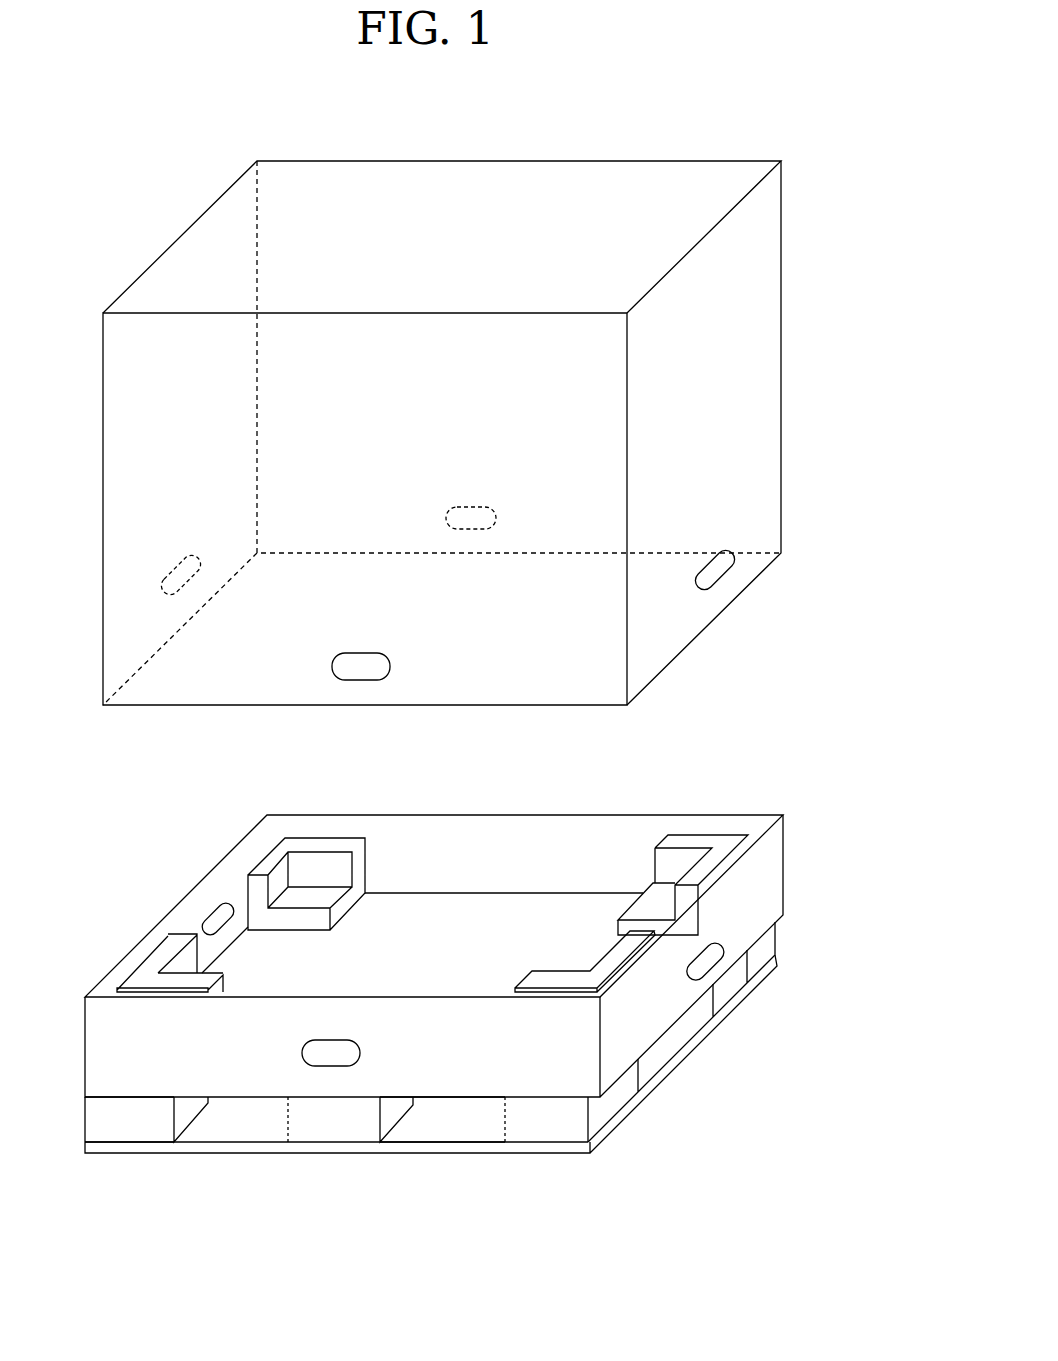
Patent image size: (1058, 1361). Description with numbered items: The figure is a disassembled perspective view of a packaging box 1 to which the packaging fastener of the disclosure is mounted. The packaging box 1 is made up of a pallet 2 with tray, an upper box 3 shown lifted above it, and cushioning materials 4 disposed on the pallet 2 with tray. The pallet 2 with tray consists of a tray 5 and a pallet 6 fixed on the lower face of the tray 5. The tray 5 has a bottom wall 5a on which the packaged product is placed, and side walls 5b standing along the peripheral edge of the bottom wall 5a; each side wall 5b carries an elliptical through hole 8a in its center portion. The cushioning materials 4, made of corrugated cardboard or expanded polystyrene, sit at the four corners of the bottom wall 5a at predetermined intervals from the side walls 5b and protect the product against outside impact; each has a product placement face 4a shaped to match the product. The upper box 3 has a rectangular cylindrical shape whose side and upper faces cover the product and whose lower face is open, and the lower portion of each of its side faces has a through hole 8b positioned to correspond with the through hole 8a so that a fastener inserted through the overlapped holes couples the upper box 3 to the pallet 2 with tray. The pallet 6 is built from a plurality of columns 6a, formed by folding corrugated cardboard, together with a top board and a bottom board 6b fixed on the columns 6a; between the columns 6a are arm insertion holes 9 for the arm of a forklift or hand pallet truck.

The packaging box 1 is at (883, 688).
The pallet with tray 2 is at (797, 872).
The upper box 3 is at (752, 483).
The cushioning material 4 is at (277, 858).
The product placement face 4a is at (322, 895).
The tray 5 is at (400, 976).
The bottom wall 5a is at (455, 935).
The side wall 5b is at (547, 813).
The pallet 6 is at (66, 1100).
The column 6a is at (125, 1123).
The bottom board 6b is at (225, 1150).
The through hole 8a is at (333, 1066).
The through hole 8b is at (347, 681).
The arm insertion hole 9 is at (458, 1123).